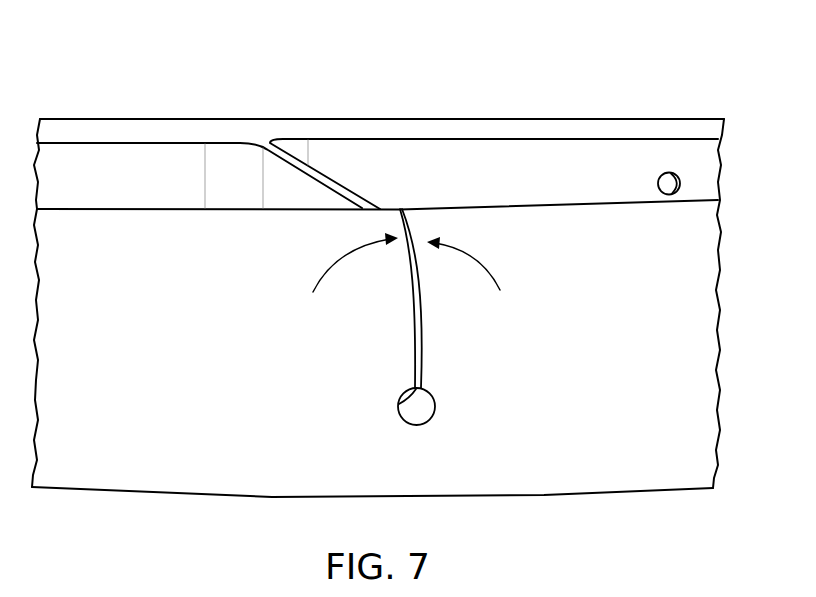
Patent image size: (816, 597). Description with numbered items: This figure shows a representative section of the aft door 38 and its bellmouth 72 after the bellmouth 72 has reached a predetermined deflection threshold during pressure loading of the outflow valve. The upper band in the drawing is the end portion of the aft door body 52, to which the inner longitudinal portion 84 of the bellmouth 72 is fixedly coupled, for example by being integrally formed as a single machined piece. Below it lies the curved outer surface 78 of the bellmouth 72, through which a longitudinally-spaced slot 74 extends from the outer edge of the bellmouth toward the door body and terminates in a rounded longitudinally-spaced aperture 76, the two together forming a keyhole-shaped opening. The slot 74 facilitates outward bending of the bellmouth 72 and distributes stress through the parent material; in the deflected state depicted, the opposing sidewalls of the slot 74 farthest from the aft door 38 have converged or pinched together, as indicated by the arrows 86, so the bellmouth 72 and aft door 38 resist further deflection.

The aft door 38 is at (366, 248).
The aft door body 52 is at (637, 128).
The bellmouth 72 is at (372, 518).
The longitudinally-spaced slot 74 is at (424, 353).
The longitudinally-spaced aperture 76 is at (426, 410).
The curved outer surface 78 is at (219, 368).
The inner longitudinal portion 84 is at (713, 462).
The arrows 86 is at (341, 257).